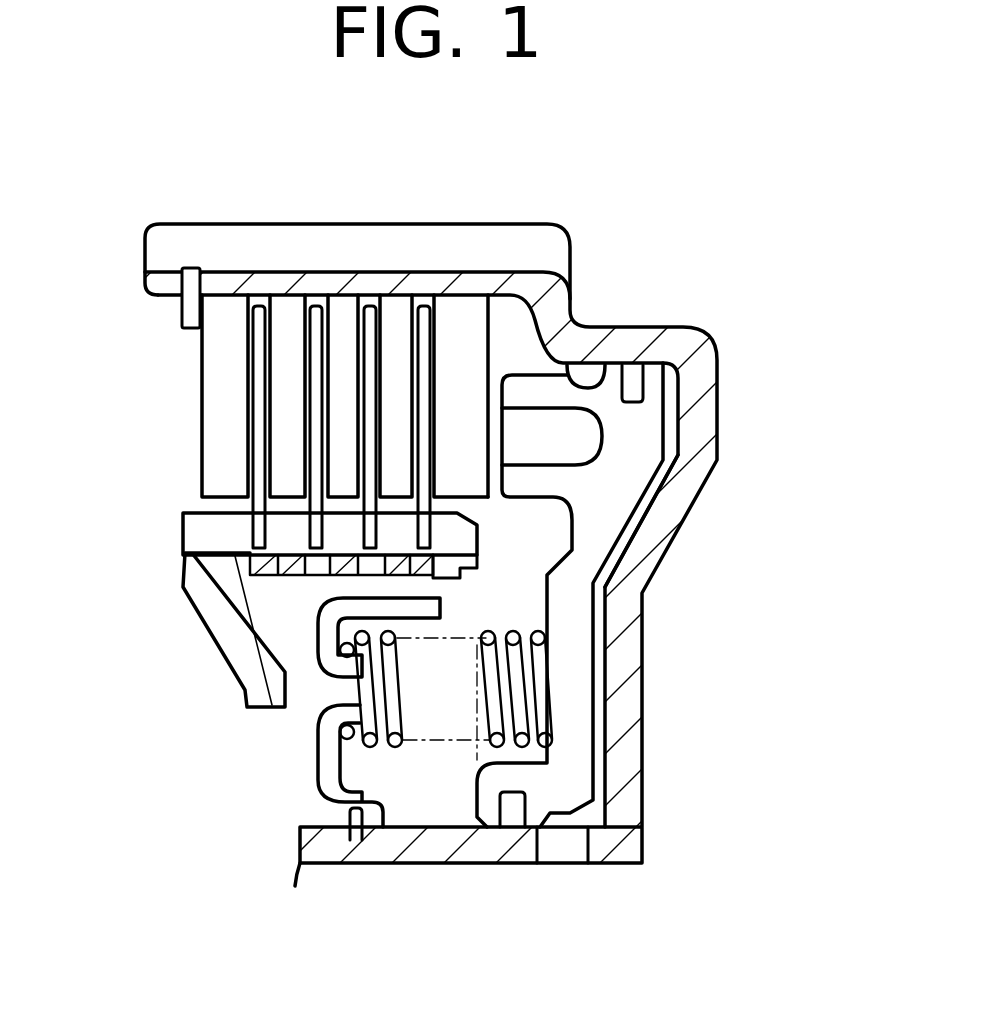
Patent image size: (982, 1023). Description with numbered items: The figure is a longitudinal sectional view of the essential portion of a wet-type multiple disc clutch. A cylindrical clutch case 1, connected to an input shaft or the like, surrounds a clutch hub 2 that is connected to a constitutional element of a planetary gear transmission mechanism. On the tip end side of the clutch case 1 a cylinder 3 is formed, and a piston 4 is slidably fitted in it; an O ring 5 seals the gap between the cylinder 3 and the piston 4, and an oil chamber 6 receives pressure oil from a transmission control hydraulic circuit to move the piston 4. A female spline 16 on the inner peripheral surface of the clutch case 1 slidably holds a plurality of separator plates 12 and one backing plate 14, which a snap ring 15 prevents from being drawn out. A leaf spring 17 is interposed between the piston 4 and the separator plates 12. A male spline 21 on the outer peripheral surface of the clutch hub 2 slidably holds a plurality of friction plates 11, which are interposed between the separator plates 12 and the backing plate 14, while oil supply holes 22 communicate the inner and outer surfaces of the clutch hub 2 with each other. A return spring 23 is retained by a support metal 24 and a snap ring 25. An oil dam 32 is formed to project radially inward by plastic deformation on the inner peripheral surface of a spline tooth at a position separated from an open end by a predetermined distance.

The clutch case 1 is at (620, 332).
The clutch hub 2 is at (195, 572).
The cylinder 3 is at (595, 380).
The piston 4 is at (647, 428).
The O ring 5 is at (637, 383).
The oil chamber 6 is at (672, 447).
The friction plates 11 is at (313, 540).
The separator plates 12 is at (443, 312).
The backing plate 14 is at (218, 380).
The snap ring 15 is at (190, 280).
The female spline 16 is at (290, 250).
The leaf spring 17 is at (483, 338).
The male spline 21 is at (213, 522).
The oil supply holes 22 is at (320, 568).
The return spring 23 is at (385, 658).
The support metal 24 is at (323, 752).
The snap ring 25 is at (325, 810).
The oil dam 32 is at (460, 578).